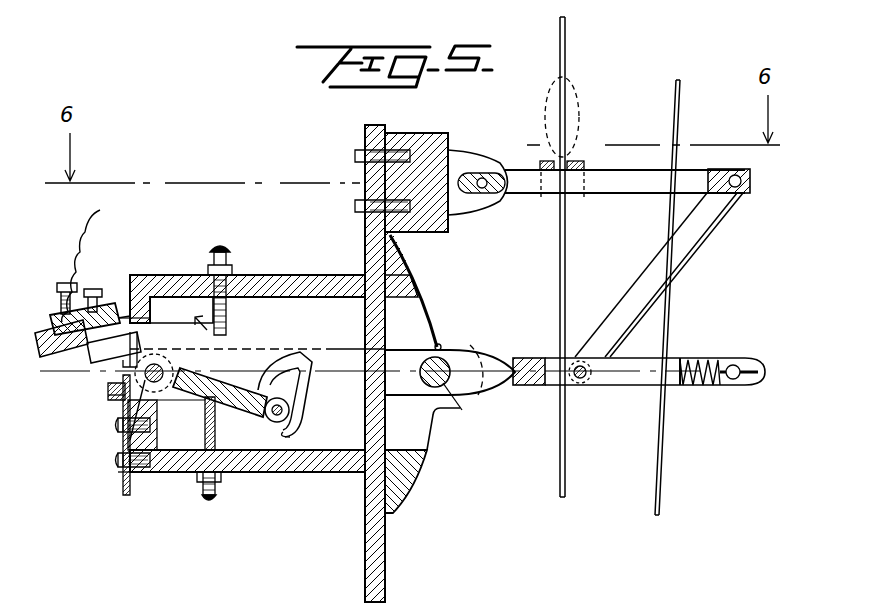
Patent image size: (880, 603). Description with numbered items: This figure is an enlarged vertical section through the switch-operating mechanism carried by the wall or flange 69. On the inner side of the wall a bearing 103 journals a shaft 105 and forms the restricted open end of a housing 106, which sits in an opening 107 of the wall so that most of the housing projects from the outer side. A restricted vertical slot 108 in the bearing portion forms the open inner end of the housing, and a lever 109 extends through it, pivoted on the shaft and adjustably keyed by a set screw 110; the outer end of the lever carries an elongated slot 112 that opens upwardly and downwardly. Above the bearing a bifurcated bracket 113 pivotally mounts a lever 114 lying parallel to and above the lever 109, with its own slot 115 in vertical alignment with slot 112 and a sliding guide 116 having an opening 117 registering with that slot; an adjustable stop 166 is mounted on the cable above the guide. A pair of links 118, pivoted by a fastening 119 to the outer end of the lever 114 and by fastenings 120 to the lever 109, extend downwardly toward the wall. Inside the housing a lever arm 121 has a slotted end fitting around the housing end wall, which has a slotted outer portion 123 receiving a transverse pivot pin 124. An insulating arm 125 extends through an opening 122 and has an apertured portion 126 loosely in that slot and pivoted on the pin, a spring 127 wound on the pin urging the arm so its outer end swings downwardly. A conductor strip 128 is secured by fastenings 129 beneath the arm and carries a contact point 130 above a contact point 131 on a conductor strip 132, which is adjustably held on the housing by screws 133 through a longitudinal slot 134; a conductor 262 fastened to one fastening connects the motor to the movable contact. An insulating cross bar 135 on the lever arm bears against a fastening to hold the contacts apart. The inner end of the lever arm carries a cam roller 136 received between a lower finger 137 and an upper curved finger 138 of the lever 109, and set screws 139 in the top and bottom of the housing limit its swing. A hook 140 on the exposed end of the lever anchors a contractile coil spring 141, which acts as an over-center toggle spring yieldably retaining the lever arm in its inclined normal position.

The wall or flange 69 is at (386, 553).
The bearing member 103 is at (415, 483).
The shaft 105 is at (464, 416).
The housing 106 is at (262, 473).
The opening 107 is at (358, 475).
The slot 108 is at (437, 345).
The lever 109 is at (462, 350).
The set screw 110 is at (440, 348).
The slot 112 is at (537, 388).
The bifurcated bracket 113 is at (420, 133).
The lever 114 is at (607, 205).
The slot 115 is at (645, 193).
The guide 116 is at (583, 160).
The opening 117 is at (530, 165).
The links 118 is at (700, 240).
The fastening 119 is at (752, 184).
The fastenings 120 is at (585, 383).
The lever arm 121 is at (225, 385).
The opening 122 is at (140, 312).
The slotted outer portion 123 is at (169, 391).
The pivot pin 124 is at (152, 378).
The arm of electrical insulating material 125 is at (120, 332).
The apertured portion 126 is at (160, 430).
The spring 127 is at (117, 426).
The electrical conductor strip 128 is at (58, 312).
The fastenings 129 is at (97, 296).
The electrical contact point 130 is at (95, 368).
The contact point 131 is at (108, 392).
The electrical conductor strip 132 is at (122, 485).
The screws or fastenings 133 is at (118, 460).
The longitudinal slot 134 is at (120, 477).
The cross bar 135 is at (55, 360).
The cam roller 136 is at (280, 400).
The finger 137 is at (292, 452).
The finger 138 is at (294, 368).
The set screw 139 is at (230, 258).
The hook 140 is at (755, 352).
The contractile coil spring 141 is at (702, 385).
The adjustable stop 166 is at (570, 95).
The conductor 262 is at (95, 256).